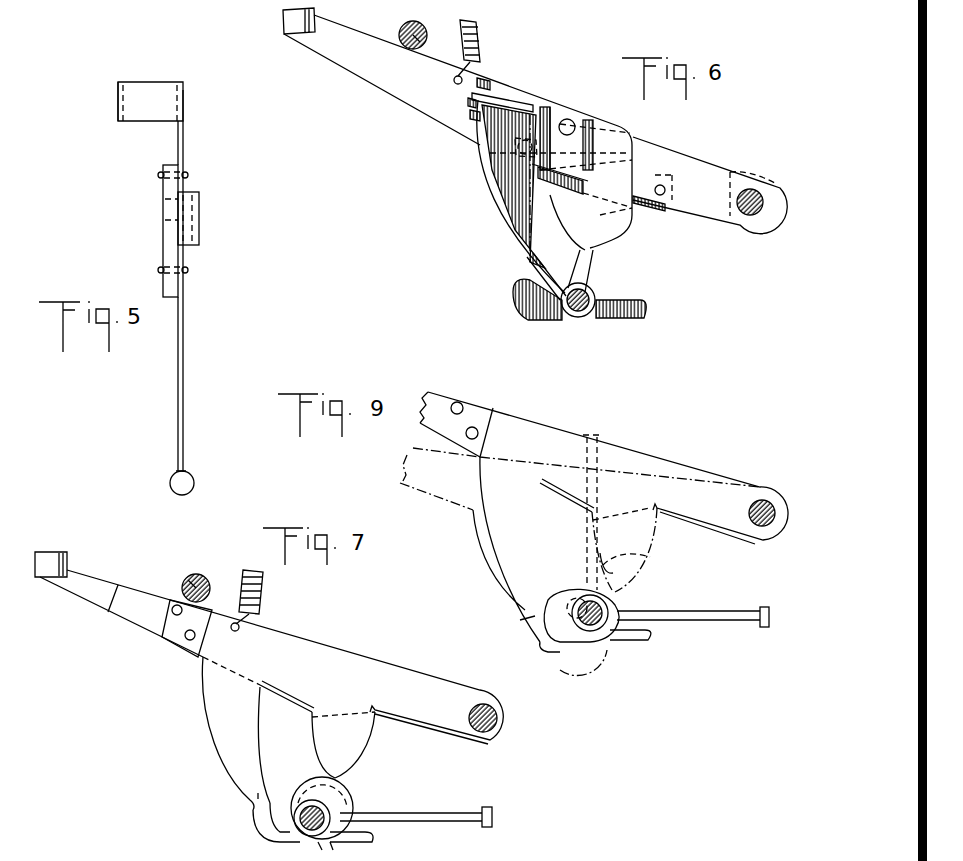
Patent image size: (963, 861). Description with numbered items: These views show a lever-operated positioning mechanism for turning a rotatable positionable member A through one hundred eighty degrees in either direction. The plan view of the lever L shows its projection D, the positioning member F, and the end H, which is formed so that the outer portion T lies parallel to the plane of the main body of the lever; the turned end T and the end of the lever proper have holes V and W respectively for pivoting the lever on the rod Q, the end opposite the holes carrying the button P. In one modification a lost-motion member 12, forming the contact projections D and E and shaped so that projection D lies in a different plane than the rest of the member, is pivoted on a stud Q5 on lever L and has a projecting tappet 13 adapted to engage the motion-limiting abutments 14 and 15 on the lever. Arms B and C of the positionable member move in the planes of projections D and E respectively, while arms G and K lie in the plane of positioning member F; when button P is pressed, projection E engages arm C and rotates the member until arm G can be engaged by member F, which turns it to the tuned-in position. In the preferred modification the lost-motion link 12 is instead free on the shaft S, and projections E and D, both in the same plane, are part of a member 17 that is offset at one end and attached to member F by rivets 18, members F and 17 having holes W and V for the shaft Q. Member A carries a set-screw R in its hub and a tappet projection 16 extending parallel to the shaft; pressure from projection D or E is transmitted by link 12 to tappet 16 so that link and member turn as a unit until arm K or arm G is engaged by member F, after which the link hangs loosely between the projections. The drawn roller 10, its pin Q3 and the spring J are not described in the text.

In FIG. 5, the outer portion T is at (113, 82).
In FIG. 5, the end H is at (144, 82).
In FIG. 5, the hole V is at (118, 98).
In FIG. 5, the hole W is at (184, 98).
In FIG. 5, the contact projection D is at (202, 213).
In FIG. 6, the contact projection D is at (626, 233).
In FIG. 7, the contact projection D is at (358, 765).
In FIG. 9, the contact projection D is at (626, 599).
In FIG. 5, the positionable member A is at (163, 225).
In FIG. 6, the positionable member A is at (596, 292).
In FIG. 7, the positionable member A is at (318, 849).
In FIG. 5, the lever L is at (188, 362).
In FIG. 6, the lever L is at (371, 76).
In FIG. 7, the lever L is at (306, 634).
In FIG. 9, the lever L is at (566, 425).
In FIG. 6, the button P is at (282, 19).
In FIG. 7, the button P is at (70, 561).
In FIG. 6, the roller 10 is at (401, 30).
In FIG. 7, the roller 10 is at (214, 567).
In FIG. 6, the roller pin Q3 is at (428, 32).
In FIG. 7, the roller pin Q3 is at (188, 576).
In FIG. 6, the spring J is at (484, 50).
In FIG. 7, the spring J is at (263, 594).
In FIG. 6, the motion-limiting abutment 14 is at (493, 93).
In FIG. 6, the tappet 13 is at (466, 101).
In FIG. 6, the motion-limiting abutment 15 is at (471, 120).
In FIG. 6, the stud Q5 is at (567, 118).
In FIG. 6, the lost-motion member 12 is at (630, 136).
In FIG. 7, the lost-motion member 12 is at (355, 796).
In FIG. 9, the lost-motion member 12 is at (562, 590).
In FIG. 6, the positioning member F is at (556, 181).
In FIG. 7, the positioning member F is at (138, 633).
In FIG. 9, the positioning member F is at (445, 392).
In FIG. 6, the contact projection E is at (512, 247).
In FIG. 7, the contact projection E is at (238, 798).
In FIG. 9, the contact projection E is at (535, 588).
In FIG. 6, the arm C is at (554, 274).
In FIG. 6, the arm B is at (595, 262).
In FIG. 6, the arm K is at (520, 309).
In FIG. 7, the arm K is at (259, 829).
In FIG. 9, the arm K is at (538, 632).
In FIG. 6, the arm G is at (648, 313).
In FIG. 7, the arm G is at (376, 841).
In FIG. 9, the arm G is at (650, 640).
In FIG. 6, the shaft S is at (578, 318).
In FIG. 7, the shaft S is at (305, 800).
In FIG. 9, the shaft S is at (578, 630).
In FIG. 6, the rod Q is at (753, 214).
In FIG. 7, the rod Q is at (490, 726).
In FIG. 9, the rod Q is at (768, 527).
In FIG. 7, the member 17 is at (176, 655).
In FIG. 9, the member 17 is at (442, 418).
In FIG. 7, the rivets 18 is at (191, 640).
In FIG. 7, the set-screw R is at (493, 815).
In FIG. 9, the set-screw R is at (770, 612).
In FIG. 7, the tappet projection 16 is at (335, 847).
In FIG. 9, the tappet projection 16 is at (608, 652).